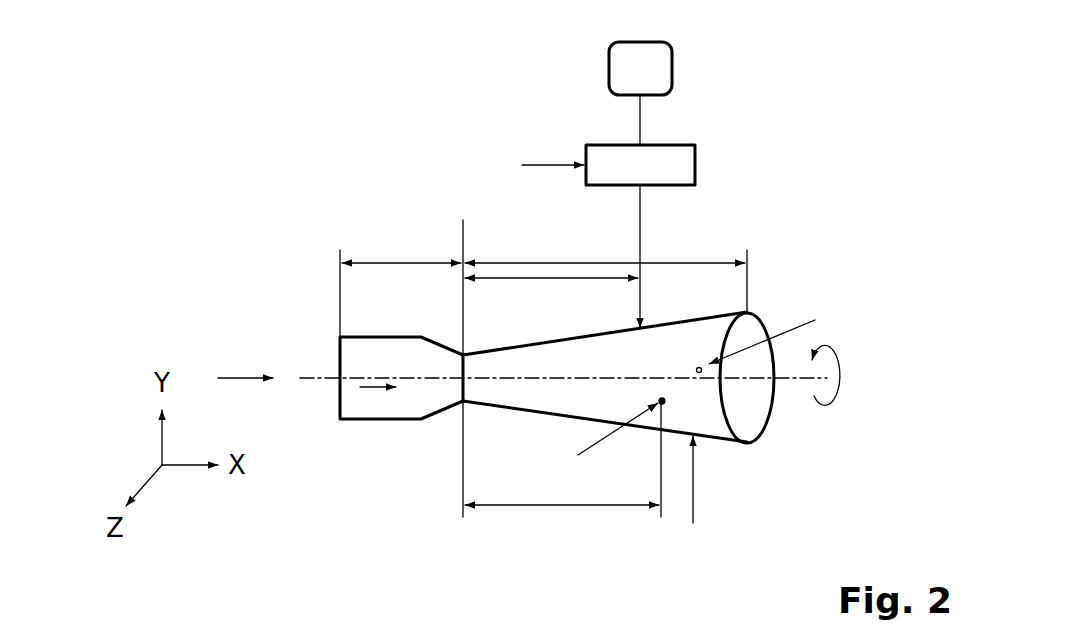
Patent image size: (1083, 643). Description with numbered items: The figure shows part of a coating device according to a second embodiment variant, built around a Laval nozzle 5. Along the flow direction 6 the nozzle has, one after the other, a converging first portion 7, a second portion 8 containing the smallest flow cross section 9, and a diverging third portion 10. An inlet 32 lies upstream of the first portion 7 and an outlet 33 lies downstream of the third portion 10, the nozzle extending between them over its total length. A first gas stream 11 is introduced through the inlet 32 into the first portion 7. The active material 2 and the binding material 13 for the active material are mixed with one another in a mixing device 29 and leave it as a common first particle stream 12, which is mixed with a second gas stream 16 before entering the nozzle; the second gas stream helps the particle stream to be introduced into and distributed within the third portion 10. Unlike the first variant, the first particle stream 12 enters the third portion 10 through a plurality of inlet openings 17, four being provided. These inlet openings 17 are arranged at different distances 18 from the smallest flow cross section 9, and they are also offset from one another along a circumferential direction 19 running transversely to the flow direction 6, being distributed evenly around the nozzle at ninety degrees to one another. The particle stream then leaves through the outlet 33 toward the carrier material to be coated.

The active material 2 is at (658, 70).
The binding material 13 is at (658, 53).
The mixing device 29 is at (695, 165).
The second gas stream 16 is at (543, 163).
The second portion 8 is at (463, 240).
The first portion 7 is at (370, 262).
The third portion 10 is at (525, 262).
The distance 18 is at (512, 278).
The first gas stream 11 is at (236, 378).
The inlet 32 is at (340, 403).
The flow direction 6 is at (378, 390).
The Laval nozzle 5 is at (646, 318).
The smallest flow cross section 9 is at (468, 385).
The outlet 33 is at (750, 428).
The first particle stream 12 is at (640, 225).
The inlet openings 17 is at (633, 330).
The circumferential direction 19 is at (842, 356).